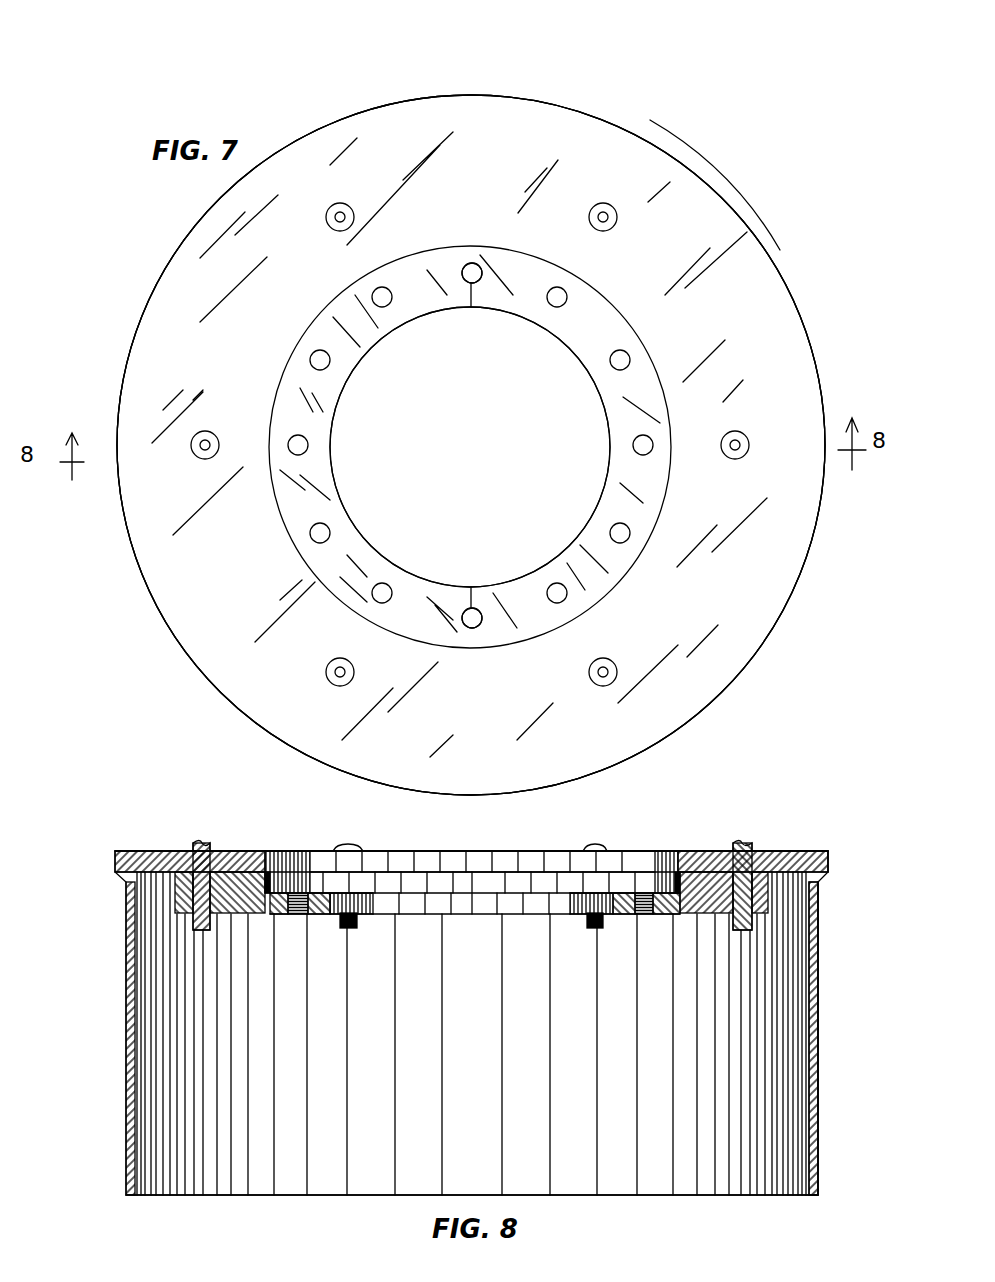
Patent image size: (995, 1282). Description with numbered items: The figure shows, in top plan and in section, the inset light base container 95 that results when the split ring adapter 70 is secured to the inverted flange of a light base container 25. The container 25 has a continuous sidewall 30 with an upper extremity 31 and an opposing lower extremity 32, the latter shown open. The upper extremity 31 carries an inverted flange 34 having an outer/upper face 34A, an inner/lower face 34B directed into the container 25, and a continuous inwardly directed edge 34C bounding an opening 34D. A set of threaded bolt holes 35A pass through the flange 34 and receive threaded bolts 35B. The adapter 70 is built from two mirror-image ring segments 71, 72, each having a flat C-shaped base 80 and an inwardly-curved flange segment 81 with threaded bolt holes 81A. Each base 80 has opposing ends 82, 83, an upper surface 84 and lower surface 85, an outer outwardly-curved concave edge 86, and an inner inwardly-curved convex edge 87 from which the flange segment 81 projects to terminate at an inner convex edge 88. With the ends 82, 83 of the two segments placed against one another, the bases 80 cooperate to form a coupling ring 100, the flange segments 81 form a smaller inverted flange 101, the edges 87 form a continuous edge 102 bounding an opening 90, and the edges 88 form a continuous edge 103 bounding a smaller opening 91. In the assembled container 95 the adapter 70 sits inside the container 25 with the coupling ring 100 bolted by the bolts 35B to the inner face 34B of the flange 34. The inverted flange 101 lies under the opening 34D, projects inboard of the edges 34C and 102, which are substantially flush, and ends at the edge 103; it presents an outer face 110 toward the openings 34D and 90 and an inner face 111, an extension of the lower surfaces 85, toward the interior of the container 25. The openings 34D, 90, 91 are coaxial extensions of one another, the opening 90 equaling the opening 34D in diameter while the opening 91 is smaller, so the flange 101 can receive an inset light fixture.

In FIG. 7, the light base container 25 is at (783, 618).
In FIG. 8, the light base container 25 is at (812, 1000).
In FIG. 8, the continuous sidewall 30 is at (818, 950).
In FIG. 7, the upper extremity 31 is at (663, 160).
In FIG. 8, the upper extremity 31 is at (125, 851).
In FIG. 8, the lower extremity 32 is at (818, 1195).
In FIG. 7, the inverted flange 34 is at (578, 128).
In FIG. 8, the inverted flange 34 is at (168, 851).
In FIG. 7, the outer/upper face 34A is at (735, 300).
In FIG. 8, the outer/upper face 34A is at (232, 880).
In FIG. 8, the inner/lower face 34B is at (178, 915).
In FIG. 7, the continuous inwardly directed edge 34C is at (428, 255).
In FIG. 8, the continuous inwardly directed edge 34C is at (300, 872).
In FIG. 7, the opening 34D is at (525, 430).
In FIG. 8, the opening 34D is at (460, 860).
In FIG. 8, the threaded bolt holes 35A is at (660, 928).
In FIG. 7, the threaded bolts 35B is at (340, 203).
In FIG. 8, the threaded bolts 35B is at (352, 846).
In FIG. 7, the adapter 70 is at (495, 325).
In FIG. 8, the adapter 70 is at (262, 922).
In FIG. 7, the ring segment 71 is at (292, 505).
In FIG. 8, the ring segment 71 is at (262, 920).
In FIG. 7, the ring segment 72 is at (652, 398).
In FIG. 8, the ring segment 72 is at (742, 935).
In FIG. 8, the base 80 is at (192, 915).
In FIG. 8, the flange segment 81 is at (322, 905).
In FIG. 7, the threaded bolt holes 81A is at (630, 533).
In FIG. 7, the end 82 is at (470, 308).
In FIG. 7, the end 83 is at (481, 270).
In FIG. 8, the upper surface 84 is at (745, 845).
In FIG. 8, the lower surface 85 is at (640, 928).
In FIG. 8, the outer outwardly-curved concave edge 86 is at (820, 900).
In FIG. 8, the inner inwardly-curved convex edge 87 is at (278, 918).
In FIG. 8, the inner inwardly-curved convex edge 88 is at (598, 928).
In FIG. 8, the opening 90 is at (432, 918).
In FIG. 8, the opening 91 is at (505, 920).
In FIG. 7, the inset light base container 95 is at (732, 203).
In FIG. 8, the inset light base container 95 is at (830, 850).
In FIG. 8, the coupling ring 100 is at (203, 843).
In FIG. 7, the inverted flange 101 is at (586, 324).
In FIG. 8, the inverted flange 101 is at (622, 918).
In FIG. 7, the continuous inwardly directed edge 102 is at (648, 378).
In FIG. 8, the continuous inwardly directed edge 102 is at (700, 880).
In FIG. 7, the continuous inwardly directed edge 103 is at (612, 425).
In FIG. 8, the continuous inwardly directed edge 103 is at (590, 890).
In FIG. 8, the outer face 110 is at (360, 925).
In FIG. 8, the inner face 111 is at (345, 930).